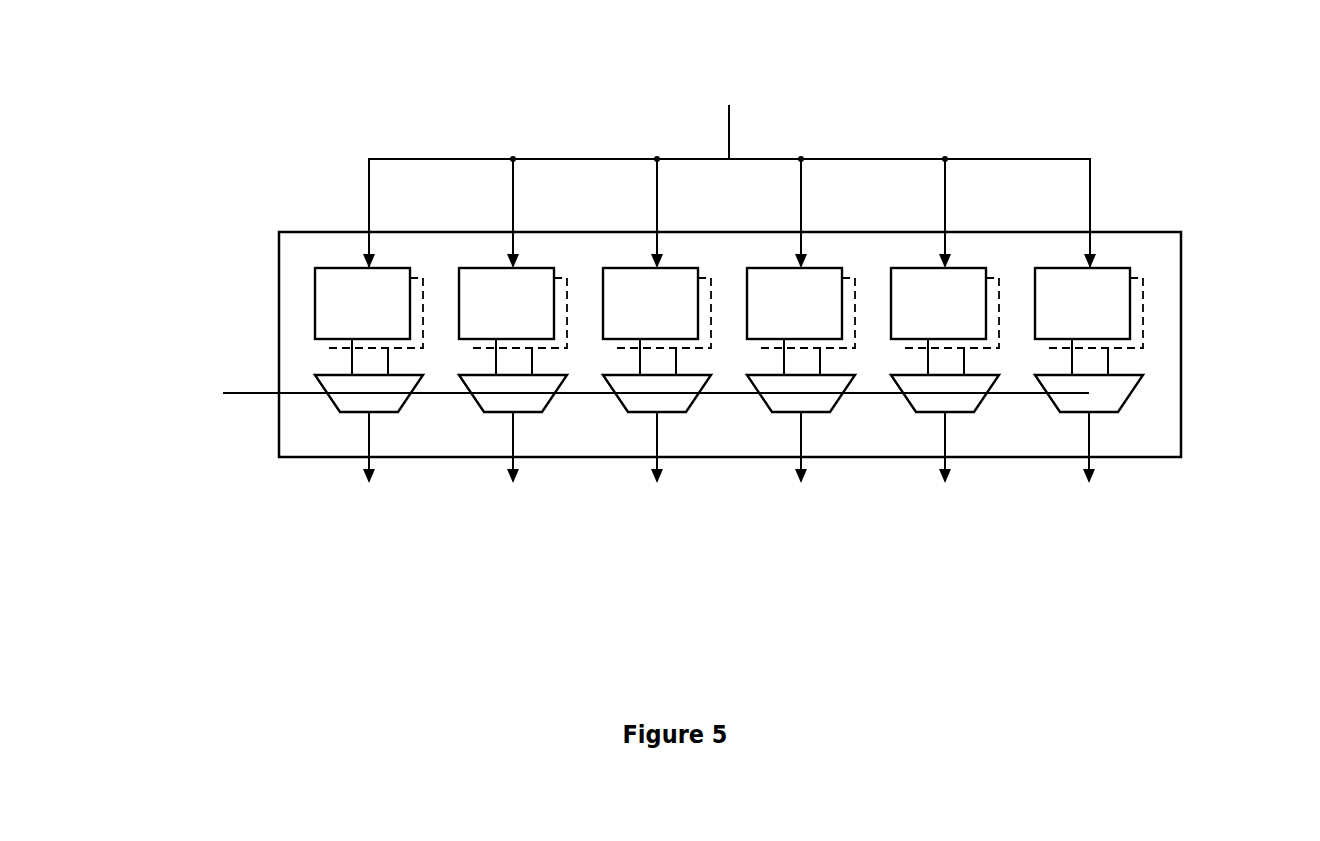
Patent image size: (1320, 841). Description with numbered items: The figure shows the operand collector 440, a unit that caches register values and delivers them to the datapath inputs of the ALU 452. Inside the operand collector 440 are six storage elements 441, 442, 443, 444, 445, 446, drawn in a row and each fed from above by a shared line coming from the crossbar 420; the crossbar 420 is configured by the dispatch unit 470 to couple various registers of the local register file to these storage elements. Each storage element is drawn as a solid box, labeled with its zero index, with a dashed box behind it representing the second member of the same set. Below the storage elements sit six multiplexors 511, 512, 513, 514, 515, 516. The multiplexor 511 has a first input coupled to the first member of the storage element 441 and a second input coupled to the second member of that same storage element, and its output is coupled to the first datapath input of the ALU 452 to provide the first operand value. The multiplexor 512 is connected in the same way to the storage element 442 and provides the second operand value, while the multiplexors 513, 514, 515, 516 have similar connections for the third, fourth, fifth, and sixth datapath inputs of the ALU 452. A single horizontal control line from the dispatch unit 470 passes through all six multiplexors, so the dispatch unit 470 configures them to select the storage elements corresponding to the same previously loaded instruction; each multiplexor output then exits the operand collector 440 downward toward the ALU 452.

The crossbar 420 is at (729, 92).
The operand collector 440 is at (1181, 344).
The storage element 441 is at (329, 314).
The storage element 442 is at (473, 314).
The storage element 443 is at (617, 314).
The storage element 444 is at (761, 314).
The storage element 445 is at (905, 314).
The storage element 446 is at (1049, 314).
The ALU 452 is at (729, 492).
The dispatch unit 470 is at (602, 394).
The multiplexor 511 is at (350, 404).
The multiplexor 512 is at (494, 404).
The multiplexor 513 is at (638, 404).
The multiplexor 514 is at (782, 404).
The multiplexor 515 is at (926, 404).
The multiplexor 516 is at (1070, 404).